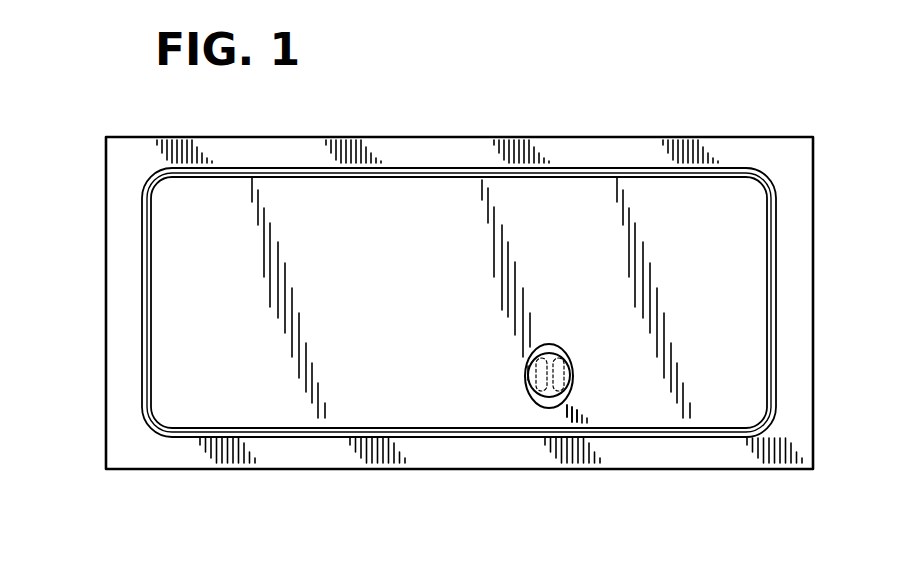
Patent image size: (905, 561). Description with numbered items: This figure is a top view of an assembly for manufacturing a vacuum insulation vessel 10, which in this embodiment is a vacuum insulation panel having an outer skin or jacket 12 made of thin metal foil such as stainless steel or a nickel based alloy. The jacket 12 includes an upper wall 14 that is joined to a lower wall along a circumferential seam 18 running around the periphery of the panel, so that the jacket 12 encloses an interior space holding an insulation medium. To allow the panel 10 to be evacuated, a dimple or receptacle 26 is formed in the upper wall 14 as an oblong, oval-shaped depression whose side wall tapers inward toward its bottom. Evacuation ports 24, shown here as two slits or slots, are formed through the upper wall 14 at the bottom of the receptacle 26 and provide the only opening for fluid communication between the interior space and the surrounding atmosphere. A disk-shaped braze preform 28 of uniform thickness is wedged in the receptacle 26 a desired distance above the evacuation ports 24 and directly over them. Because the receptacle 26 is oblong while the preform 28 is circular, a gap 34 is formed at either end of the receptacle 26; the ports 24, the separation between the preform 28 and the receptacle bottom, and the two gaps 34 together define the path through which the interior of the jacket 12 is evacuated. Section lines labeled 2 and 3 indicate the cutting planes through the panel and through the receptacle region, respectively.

The vacuum insulation vessel 10 is at (631, 116).
The jacket 12 is at (156, 422).
The upper wall 14 is at (728, 389).
The circumferential seam 18 is at (727, 450).
The evacuation ports 24 is at (565, 369).
The receptacle 26 is at (575, 395).
The braze preform 28 is at (532, 372).
The gap 34 is at (550, 347).
The section line 2- 2 is at (63, 341).
The section line 3- 3 is at (494, 407).